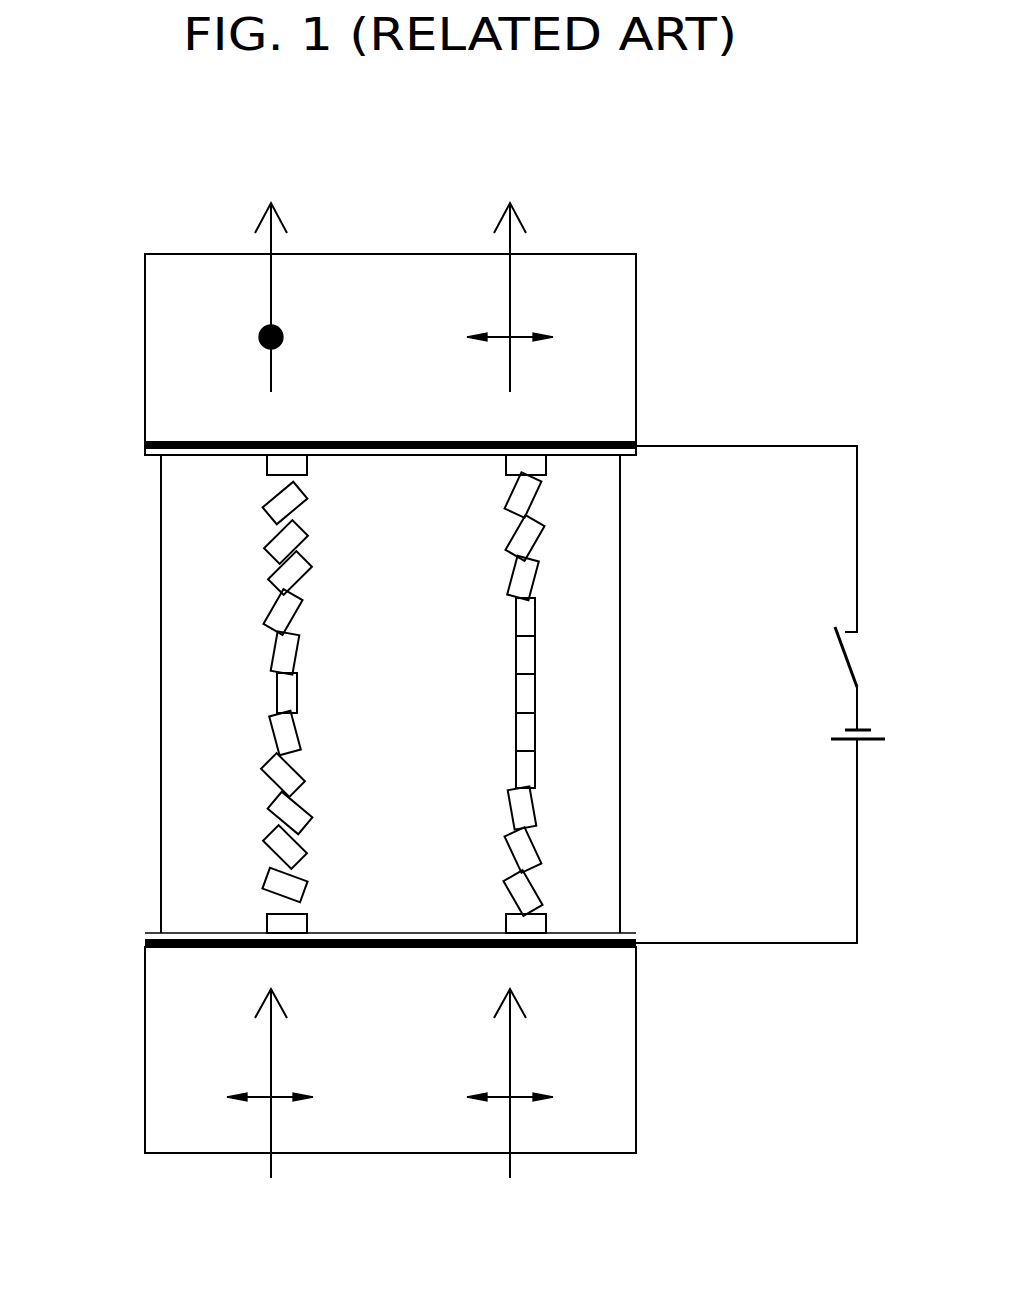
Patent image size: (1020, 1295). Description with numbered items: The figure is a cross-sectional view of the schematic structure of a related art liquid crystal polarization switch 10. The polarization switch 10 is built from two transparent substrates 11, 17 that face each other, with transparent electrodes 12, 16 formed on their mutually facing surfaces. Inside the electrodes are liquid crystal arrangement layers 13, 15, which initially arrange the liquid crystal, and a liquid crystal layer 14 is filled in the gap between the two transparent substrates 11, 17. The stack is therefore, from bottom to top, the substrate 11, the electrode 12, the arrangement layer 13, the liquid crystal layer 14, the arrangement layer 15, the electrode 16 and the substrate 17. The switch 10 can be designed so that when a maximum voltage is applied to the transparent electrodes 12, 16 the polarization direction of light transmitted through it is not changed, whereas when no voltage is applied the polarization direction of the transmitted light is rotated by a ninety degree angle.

The liquid crystal polarization switch 10 is at (567, 1218).
The transparent substrate 11 is at (155, 1047).
The transparent electrode 12 is at (145, 947).
The liquid crystal arrangement layer 13 is at (145, 935).
The liquid crystal layer 14 is at (170, 697).
The liquid crystal arrangement layer 15 is at (145, 453).
The transparent electrode 16 is at (145, 444).
The transparent substrate 17 is at (156, 337).